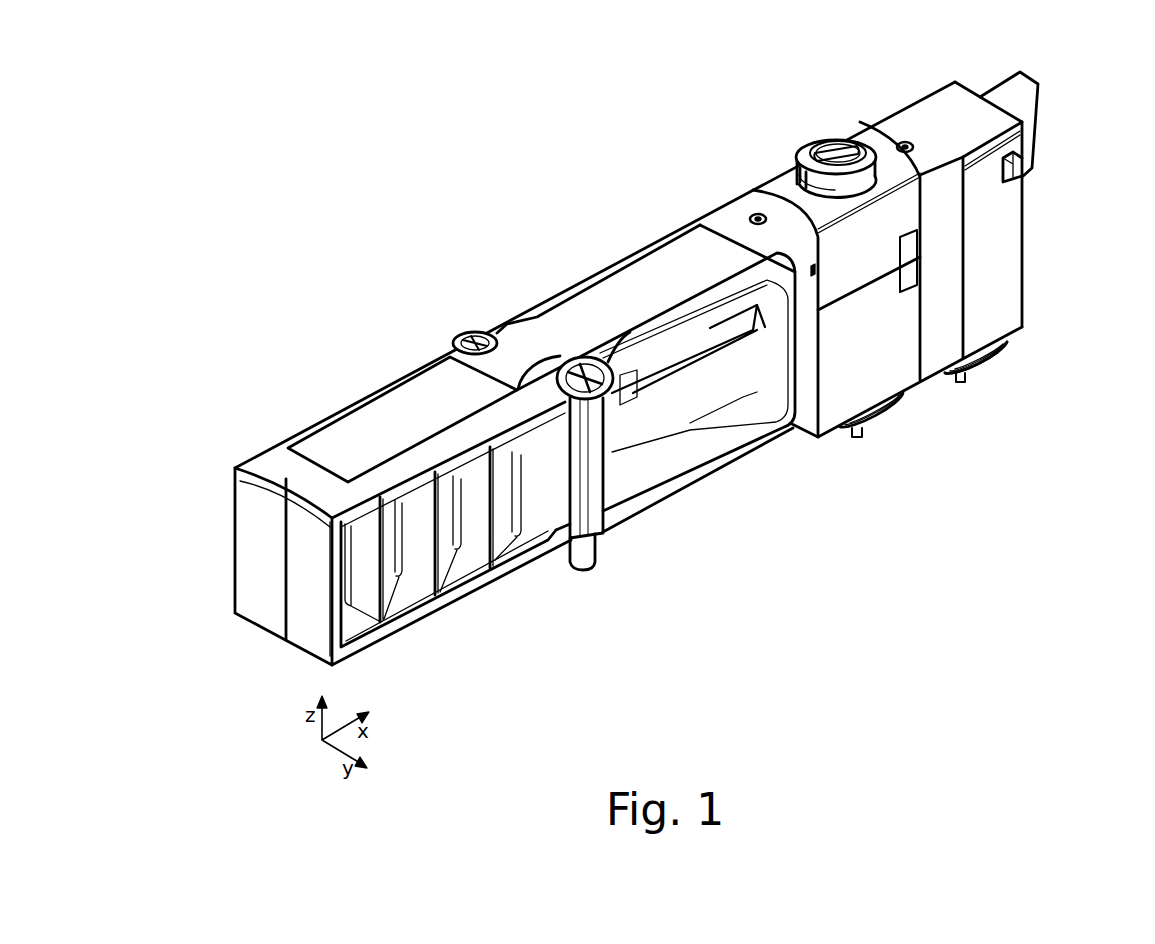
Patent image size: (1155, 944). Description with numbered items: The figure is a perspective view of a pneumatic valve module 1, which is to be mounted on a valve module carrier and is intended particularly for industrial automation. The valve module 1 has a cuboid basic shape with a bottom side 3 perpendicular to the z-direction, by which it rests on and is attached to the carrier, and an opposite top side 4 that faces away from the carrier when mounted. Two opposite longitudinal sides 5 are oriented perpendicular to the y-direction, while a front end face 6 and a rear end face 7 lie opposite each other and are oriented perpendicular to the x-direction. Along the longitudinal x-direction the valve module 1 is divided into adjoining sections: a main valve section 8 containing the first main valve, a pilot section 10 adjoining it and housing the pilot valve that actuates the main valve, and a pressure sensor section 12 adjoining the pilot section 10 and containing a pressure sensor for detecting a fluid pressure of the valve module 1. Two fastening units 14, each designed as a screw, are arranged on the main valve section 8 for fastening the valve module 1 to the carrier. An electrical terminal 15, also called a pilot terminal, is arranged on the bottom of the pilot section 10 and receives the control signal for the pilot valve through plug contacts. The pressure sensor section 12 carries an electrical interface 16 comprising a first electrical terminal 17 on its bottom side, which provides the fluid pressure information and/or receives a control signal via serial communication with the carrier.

The valve module 1 is at (284, 188).
The bottom side 3 is at (656, 509).
The top side 4 is at (606, 256).
The longitudinal sides 5 is at (379, 373).
The front end face 6 is at (270, 590).
The rear end face 7 is at (1047, 214).
The main valve section 8 is at (333, 437).
The pilot section 10 is at (773, 191).
The pressure sensor section 12 is at (893, 125).
The fastening unit 14 is at (465, 334).
The electrical terminal 15 is at (865, 440).
The electrical interface 16 is at (978, 377).
The first electrical terminal 17 is at (976, 357).